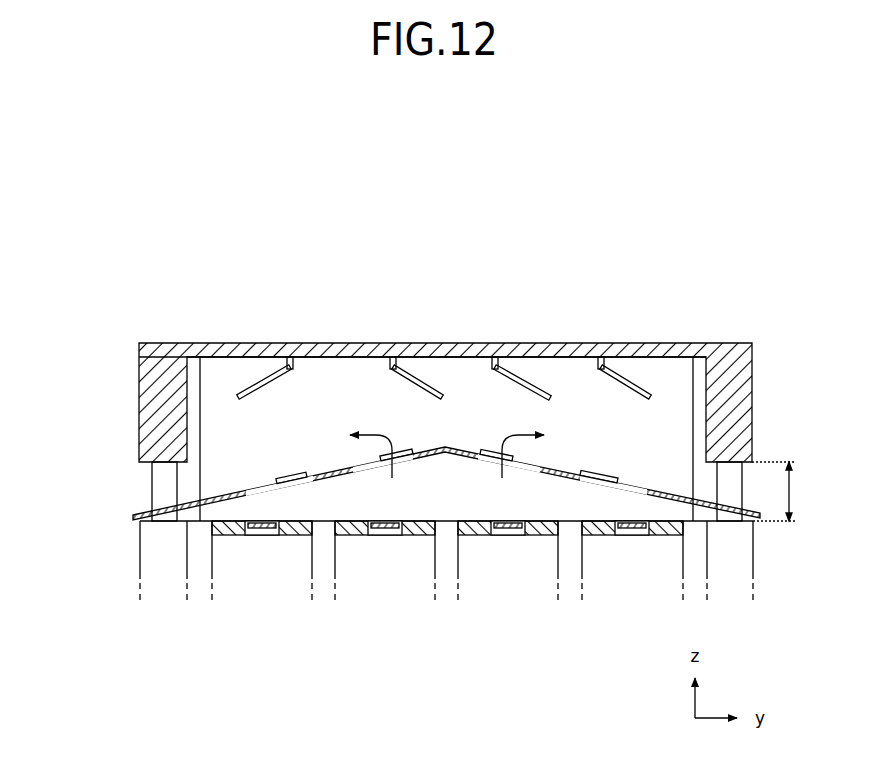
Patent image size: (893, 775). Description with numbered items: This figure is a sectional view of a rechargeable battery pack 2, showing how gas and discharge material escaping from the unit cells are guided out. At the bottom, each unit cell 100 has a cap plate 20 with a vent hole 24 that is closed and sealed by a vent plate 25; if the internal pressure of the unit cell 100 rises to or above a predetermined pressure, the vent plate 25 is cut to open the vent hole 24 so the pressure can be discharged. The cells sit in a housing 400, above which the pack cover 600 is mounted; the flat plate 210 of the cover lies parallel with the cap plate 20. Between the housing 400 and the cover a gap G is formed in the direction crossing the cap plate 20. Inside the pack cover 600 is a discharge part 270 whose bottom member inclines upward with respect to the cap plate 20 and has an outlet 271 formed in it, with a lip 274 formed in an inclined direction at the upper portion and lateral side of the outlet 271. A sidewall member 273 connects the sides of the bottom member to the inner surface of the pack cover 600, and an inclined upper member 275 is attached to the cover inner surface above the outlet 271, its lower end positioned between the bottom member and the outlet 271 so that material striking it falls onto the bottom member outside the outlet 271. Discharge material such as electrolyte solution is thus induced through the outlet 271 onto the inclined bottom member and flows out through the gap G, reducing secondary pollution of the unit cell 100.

The rechargeable battery pack 2 is at (475, 276).
The pack cover 600 is at (716, 341).
The flat plate 210 is at (597, 350).
The sidewall member 273 is at (219, 380).
The inclined upper member 275 is at (259, 381).
The discharge part 270 is at (650, 468).
The outlet 271 is at (263, 485).
The lip 274 is at (310, 472).
The gap G is at (782, 491).
The unit cell 100 is at (440, 600).
The housing 400 is at (138, 573).
The cap plate 20 is at (224, 537).
The vent hole 24 is at (257, 537).
The vent plate 25 is at (270, 536).